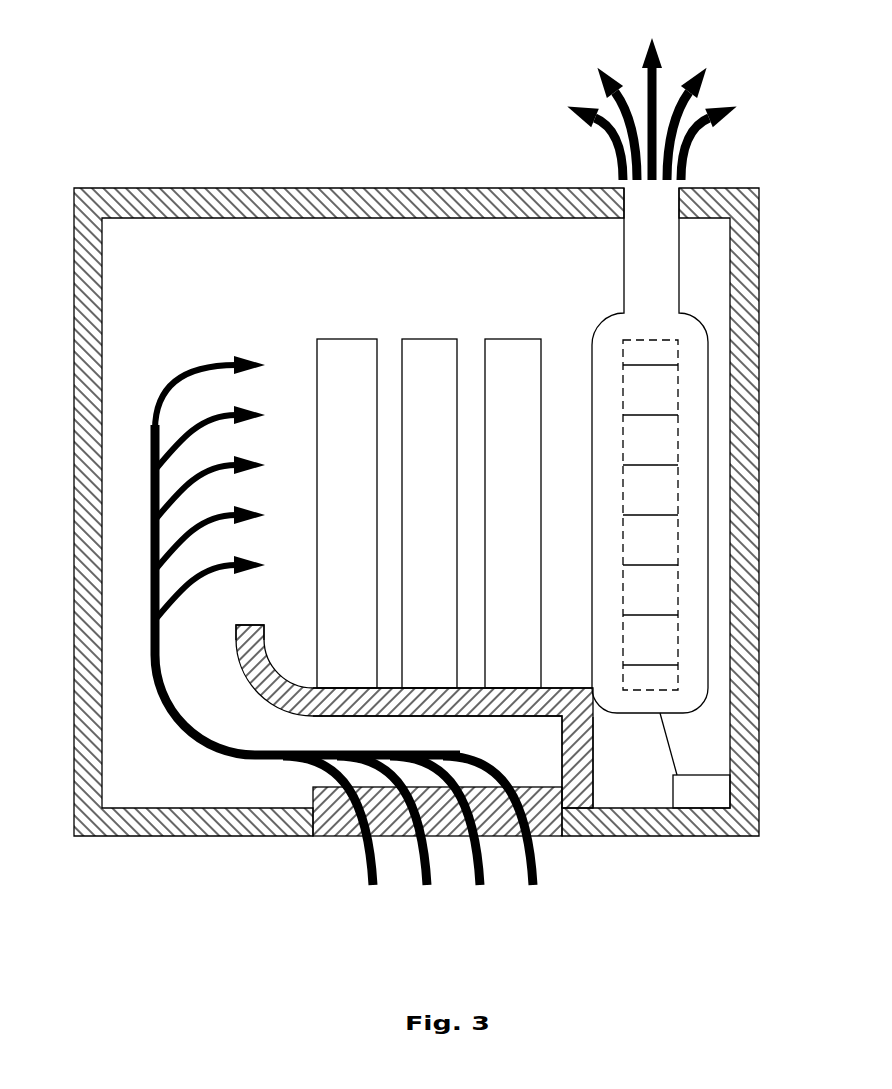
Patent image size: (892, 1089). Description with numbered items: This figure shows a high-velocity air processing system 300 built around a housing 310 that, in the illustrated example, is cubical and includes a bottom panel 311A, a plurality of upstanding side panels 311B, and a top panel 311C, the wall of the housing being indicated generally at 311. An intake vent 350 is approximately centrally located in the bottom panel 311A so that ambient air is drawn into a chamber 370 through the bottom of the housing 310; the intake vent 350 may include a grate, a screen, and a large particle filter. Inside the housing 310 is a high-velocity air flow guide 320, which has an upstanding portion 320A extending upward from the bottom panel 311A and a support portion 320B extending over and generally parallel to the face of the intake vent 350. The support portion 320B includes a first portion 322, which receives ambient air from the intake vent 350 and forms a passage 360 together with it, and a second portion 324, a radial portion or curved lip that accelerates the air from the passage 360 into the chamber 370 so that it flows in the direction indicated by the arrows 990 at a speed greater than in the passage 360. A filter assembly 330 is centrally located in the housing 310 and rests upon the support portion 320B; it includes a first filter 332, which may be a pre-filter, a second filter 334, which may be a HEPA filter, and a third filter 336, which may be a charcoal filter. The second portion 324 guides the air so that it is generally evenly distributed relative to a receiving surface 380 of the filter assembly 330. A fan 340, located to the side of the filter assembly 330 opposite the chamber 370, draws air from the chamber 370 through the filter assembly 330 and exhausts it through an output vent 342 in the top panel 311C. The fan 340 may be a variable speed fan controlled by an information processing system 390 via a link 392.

The high-velocity air processing system 300 is at (380, 85).
The housing 310 is at (445, 519).
The housing side wall 311 is at (759, 380).
The bottom panel 311A is at (430, 852).
The upstanding side panels 311B is at (102, 370).
The top panel 311C is at (210, 188).
The high-velocity air flow guide 320 is at (593, 755).
The upstanding portion 320A is at (593, 770).
The support portion 320B is at (355, 717).
The first portion 322 is at (490, 717).
The second portion 324 is at (248, 625).
The filter assembly 330 is at (448, 463).
The first filter 332 is at (330, 339).
The second filter 334 is at (430, 339).
The third filter 336 is at (513, 339).
The fan 340 is at (623, 258).
The output vent 342 is at (688, 188).
The intake vent 350 is at (330, 836).
The passage 360 is at (316, 755).
The chamber 370 is at (208, 265).
The receiving surface 380 is at (317, 385).
The information processing system 390 is at (701, 791).
The link 392 is at (672, 742).
The arrows 990 is at (172, 725).